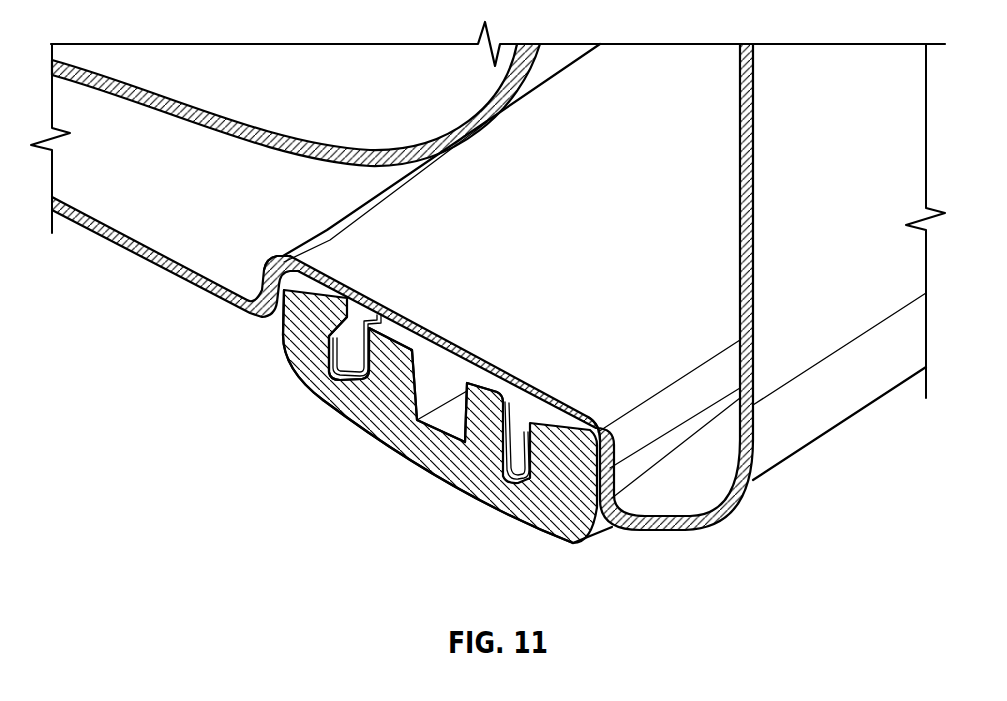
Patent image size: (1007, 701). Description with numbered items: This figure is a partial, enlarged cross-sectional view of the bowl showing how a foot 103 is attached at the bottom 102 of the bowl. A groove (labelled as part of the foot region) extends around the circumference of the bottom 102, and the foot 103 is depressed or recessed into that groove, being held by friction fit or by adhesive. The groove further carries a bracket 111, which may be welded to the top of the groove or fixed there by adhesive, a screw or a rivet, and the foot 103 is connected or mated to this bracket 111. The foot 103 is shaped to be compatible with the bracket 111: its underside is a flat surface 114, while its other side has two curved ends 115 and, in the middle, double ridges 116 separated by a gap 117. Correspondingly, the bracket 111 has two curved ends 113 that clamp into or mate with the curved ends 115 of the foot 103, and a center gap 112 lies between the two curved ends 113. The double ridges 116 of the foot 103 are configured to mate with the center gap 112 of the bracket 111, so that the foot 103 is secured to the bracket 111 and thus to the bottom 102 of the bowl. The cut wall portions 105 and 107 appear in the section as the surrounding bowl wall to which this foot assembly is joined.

The bottom 102 is at (140, 257).
The foot 103 is at (420, 463).
The upper wall portion 105 is at (180, 110).
The side wall 107 is at (837, 233).
The bracket 111 is at (336, 374).
The center gap 112 is at (434, 350).
The curved ends 113 is at (350, 366).
The flat surface 114 is at (490, 509).
The curved ends 115 is at (321, 268).
The double ridges 116 is at (392, 340).
The gap 117 is at (428, 392).